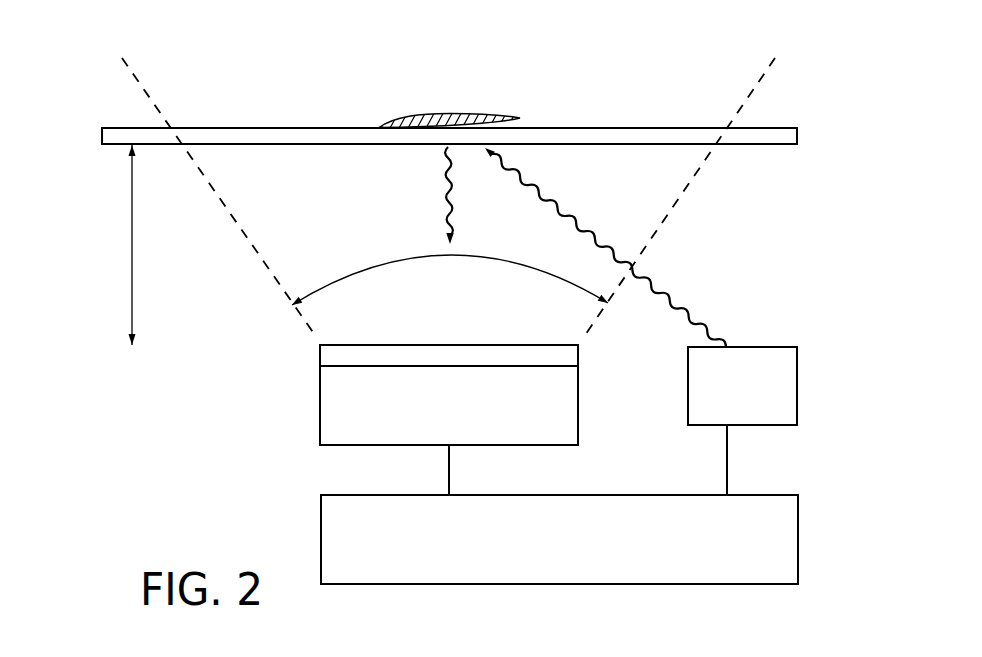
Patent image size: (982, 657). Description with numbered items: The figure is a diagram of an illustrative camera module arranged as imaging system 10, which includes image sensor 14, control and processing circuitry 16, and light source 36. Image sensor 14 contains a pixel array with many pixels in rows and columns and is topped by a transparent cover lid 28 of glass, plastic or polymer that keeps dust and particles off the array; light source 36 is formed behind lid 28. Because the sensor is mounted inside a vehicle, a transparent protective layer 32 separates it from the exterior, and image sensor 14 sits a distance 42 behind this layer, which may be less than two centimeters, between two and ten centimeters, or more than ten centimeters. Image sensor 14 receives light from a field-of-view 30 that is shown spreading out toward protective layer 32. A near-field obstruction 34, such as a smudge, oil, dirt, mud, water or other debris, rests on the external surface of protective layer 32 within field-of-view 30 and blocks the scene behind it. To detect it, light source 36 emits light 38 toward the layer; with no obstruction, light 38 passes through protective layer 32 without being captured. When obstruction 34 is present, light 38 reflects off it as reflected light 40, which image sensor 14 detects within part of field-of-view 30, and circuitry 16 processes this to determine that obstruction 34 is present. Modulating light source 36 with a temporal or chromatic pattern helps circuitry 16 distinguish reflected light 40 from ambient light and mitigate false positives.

The imaging system 10 is at (191, 38).
The image sensor 14 is at (421, 408).
The control and processing circuitry 16 is at (682, 573).
The cover lid 28 is at (330, 357).
The field-of-view 30 is at (388, 262).
The protective layer 32 is at (265, 135).
The near-field obstruction 34 is at (459, 116).
The light source 36 is at (752, 413).
The emitted light 38 is at (655, 285).
The reflected light 40 is at (447, 193).
The distance 42 is at (132, 252).